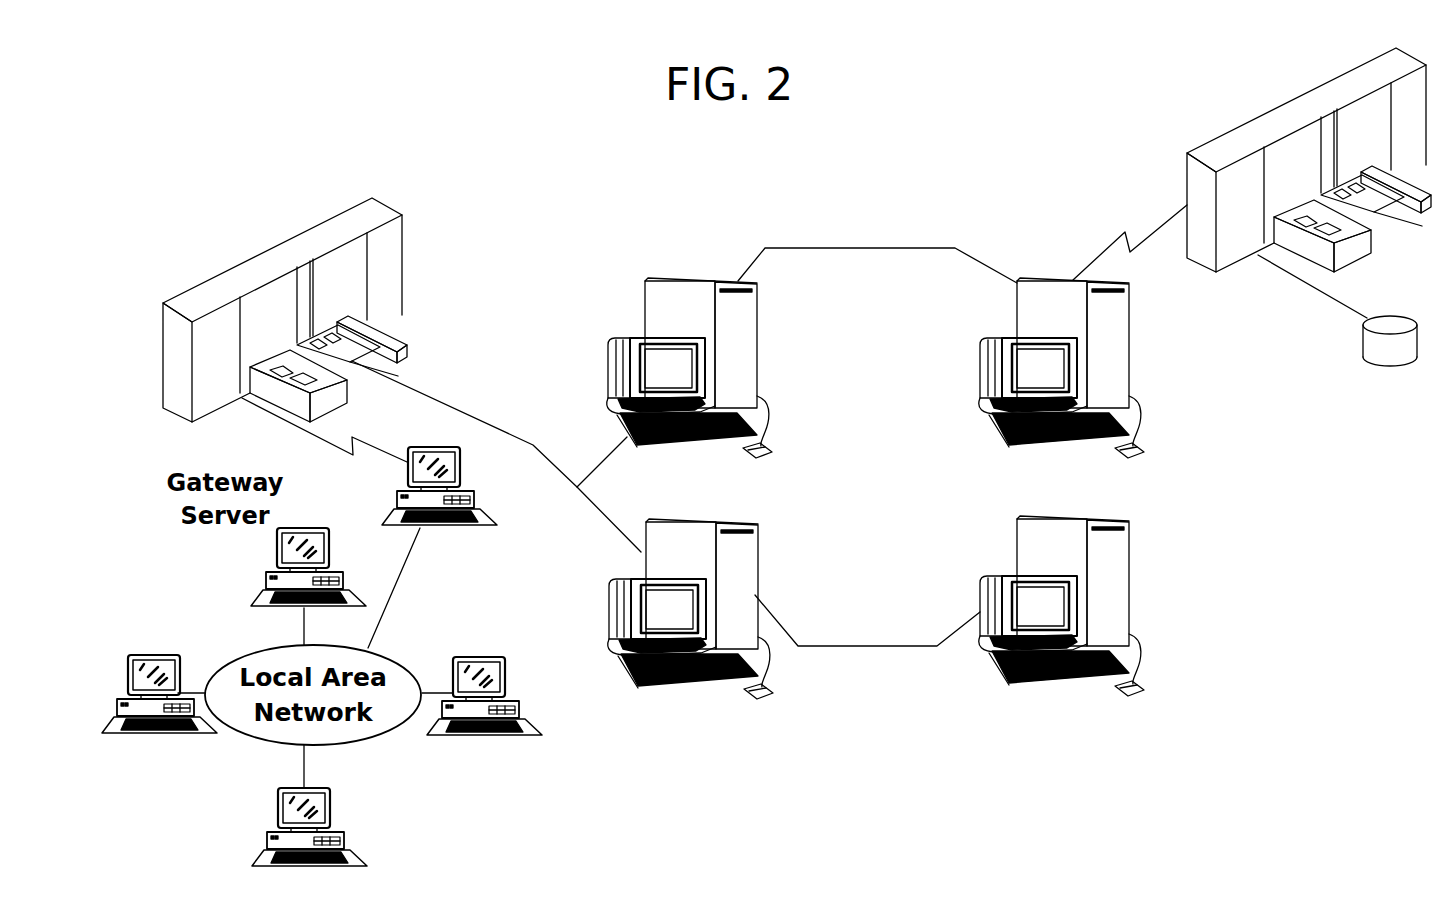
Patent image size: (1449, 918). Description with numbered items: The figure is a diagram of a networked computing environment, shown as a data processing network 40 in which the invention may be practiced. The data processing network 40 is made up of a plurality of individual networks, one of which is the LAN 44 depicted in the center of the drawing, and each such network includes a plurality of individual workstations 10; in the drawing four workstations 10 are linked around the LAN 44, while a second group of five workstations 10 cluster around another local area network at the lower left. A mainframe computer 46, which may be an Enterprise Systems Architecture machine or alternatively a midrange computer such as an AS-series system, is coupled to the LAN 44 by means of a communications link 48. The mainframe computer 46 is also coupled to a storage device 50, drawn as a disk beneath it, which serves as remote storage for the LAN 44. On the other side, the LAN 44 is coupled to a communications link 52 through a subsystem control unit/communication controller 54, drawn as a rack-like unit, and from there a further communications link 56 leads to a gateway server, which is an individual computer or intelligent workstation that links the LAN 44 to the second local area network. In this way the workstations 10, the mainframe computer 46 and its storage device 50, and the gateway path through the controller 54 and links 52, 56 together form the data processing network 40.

The workstation 10 is at (647, 303).
The data processing network 40 is at (920, 205).
The LAN 44 is at (877, 447).
The mainframe computer 46 is at (1241, 140).
The communications link 48 is at (1153, 227).
The storage device 50 is at (1370, 340).
The communications link 52 is at (457, 412).
The subsystem control unit/communication controller 54 is at (267, 267).
The communications link 56 is at (324, 430).